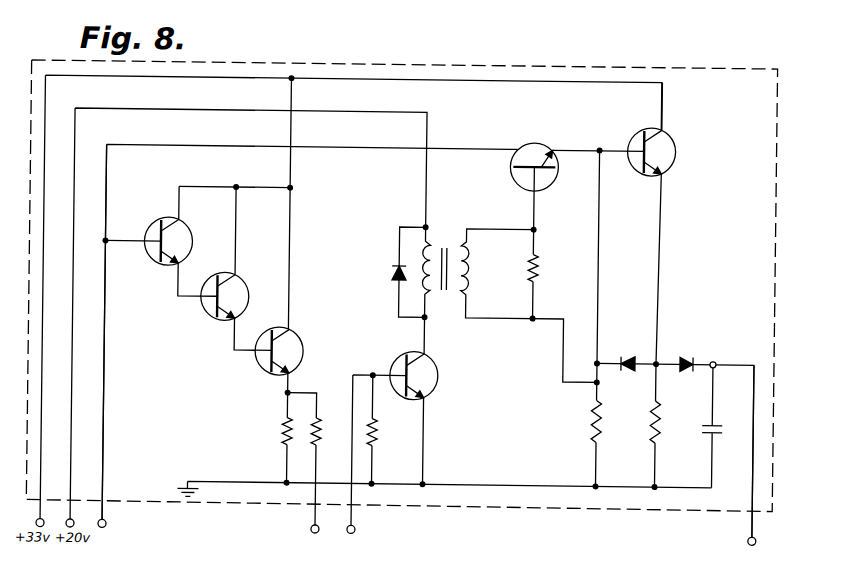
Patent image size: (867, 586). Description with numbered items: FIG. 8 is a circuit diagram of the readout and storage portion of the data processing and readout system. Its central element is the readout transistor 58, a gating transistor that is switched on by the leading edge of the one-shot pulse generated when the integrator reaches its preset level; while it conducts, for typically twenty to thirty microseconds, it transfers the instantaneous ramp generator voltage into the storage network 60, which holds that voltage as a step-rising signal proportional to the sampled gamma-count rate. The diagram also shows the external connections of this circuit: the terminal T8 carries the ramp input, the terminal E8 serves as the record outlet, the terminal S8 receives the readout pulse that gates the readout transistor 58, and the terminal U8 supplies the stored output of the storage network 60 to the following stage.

The readout transistor 58 is at (535, 141).
The storage network 60 is at (722, 283).
The T8 input terminal (to T7 ramp) T8 is at (116, 355).
The E8 record outlet terminal E8 is at (281, 481).
The S8 readout pulse terminal (to S7) S8 is at (381, 464).
The U8 output terminal (to U9) U8 is at (771, 463).